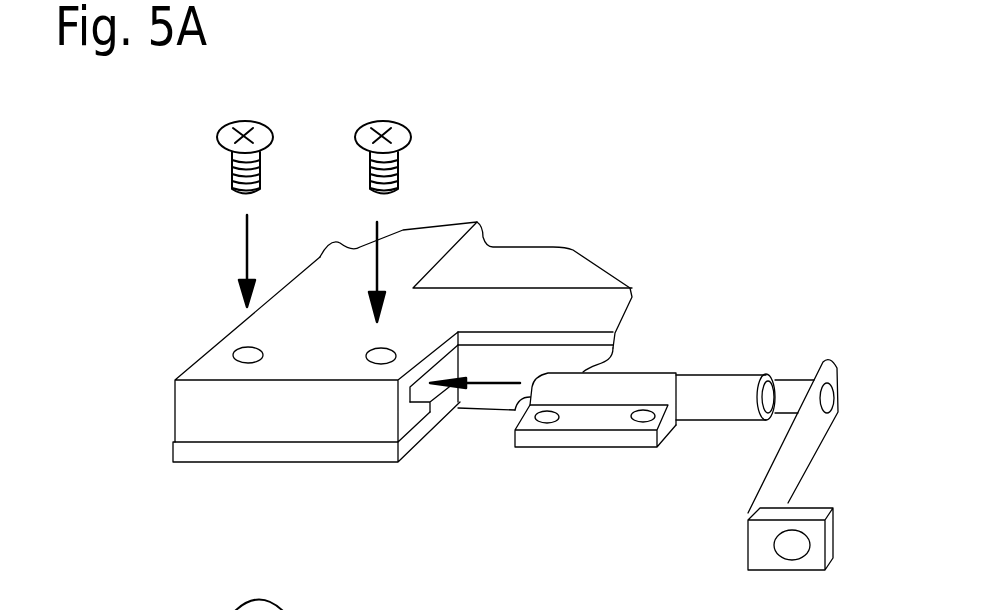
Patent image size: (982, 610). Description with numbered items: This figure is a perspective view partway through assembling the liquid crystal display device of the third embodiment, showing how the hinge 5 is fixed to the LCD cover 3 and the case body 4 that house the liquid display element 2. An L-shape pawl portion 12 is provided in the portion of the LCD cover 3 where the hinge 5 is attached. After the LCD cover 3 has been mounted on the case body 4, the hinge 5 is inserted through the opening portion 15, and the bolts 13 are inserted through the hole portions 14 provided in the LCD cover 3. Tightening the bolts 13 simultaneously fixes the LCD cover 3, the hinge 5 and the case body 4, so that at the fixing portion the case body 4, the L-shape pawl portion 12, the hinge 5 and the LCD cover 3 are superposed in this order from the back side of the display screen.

The liquid display element 2 is at (560, 245).
The LCD cover 3 is at (197, 360).
The case body 4 is at (320, 462).
The hinge 5 is at (718, 362).
The L-shape pawl portion 12 is at (419, 408).
The bolt 13 is at (368, 110).
The hole portion 14 is at (248, 357).
The opening portion 15 is at (438, 395).